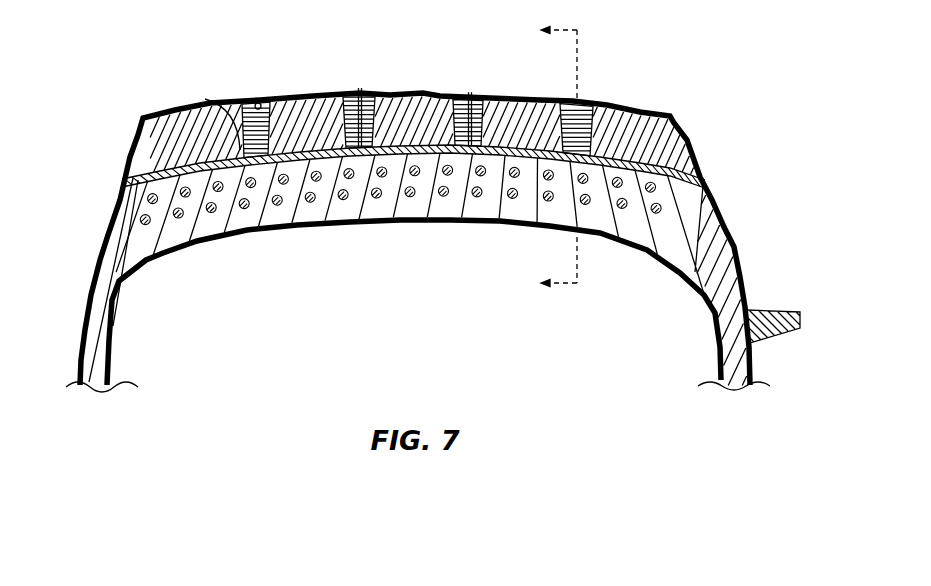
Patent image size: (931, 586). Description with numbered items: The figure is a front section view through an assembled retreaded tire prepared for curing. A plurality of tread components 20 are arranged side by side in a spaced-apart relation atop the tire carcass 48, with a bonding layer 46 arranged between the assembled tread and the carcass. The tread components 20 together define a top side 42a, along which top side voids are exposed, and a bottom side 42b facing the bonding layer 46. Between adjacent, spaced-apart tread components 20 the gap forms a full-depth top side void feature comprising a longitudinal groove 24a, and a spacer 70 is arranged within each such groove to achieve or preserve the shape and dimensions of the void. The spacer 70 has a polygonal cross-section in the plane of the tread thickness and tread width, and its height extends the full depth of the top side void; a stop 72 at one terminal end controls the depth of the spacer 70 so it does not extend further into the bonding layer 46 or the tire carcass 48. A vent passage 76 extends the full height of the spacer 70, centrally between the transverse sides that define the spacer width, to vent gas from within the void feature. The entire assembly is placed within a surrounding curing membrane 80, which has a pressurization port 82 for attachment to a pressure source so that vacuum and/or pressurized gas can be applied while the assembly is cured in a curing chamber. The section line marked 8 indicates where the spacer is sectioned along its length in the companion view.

The tread component 20 is at (170, 138).
The longitudinal groove 24a is at (256, 105).
The top side 42a is at (410, 95).
The bottom side 42b is at (416, 150).
The bonding layer 46 is at (686, 142).
The tire carcass 48 is at (102, 265).
The spacer 70 is at (220, 120).
The stop 72 is at (262, 108).
The vent passage 76 is at (361, 92).
The curing membrane 80 is at (723, 205).
The pressurization port 82 is at (775, 309).
The section line 8- 8 is at (549, 158).